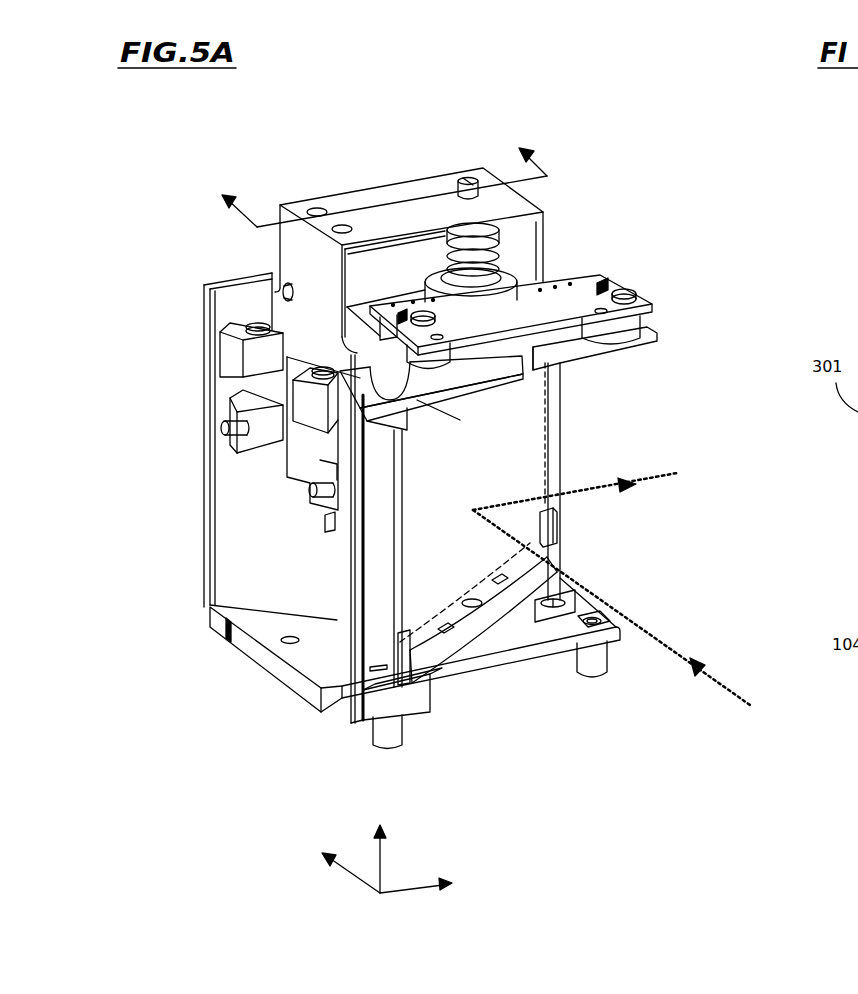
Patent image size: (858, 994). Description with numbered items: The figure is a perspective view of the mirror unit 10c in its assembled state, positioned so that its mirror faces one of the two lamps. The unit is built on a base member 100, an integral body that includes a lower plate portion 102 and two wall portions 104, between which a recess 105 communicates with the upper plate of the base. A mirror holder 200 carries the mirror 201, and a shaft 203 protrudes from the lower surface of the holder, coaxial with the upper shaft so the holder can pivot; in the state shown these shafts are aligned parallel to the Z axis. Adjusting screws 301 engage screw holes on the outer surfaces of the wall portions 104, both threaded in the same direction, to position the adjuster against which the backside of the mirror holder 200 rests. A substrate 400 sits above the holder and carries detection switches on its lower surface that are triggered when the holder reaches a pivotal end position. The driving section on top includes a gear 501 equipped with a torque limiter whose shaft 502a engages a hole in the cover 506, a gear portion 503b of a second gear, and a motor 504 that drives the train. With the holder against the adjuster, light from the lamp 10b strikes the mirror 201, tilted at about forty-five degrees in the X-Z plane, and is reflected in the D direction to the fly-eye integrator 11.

The base member 100 is at (265, 698).
The lower plate portion 102 is at (553, 618).
The wall portions 104 is at (227, 493).
The recess 105 is at (295, 580).
The mirror holder 200 is at (570, 415).
The mirror 201 is at (510, 476).
The shaft 203 is at (485, 594).
The adjusting screws 301 is at (312, 482).
The substrate 400 is at (582, 273).
The gear 501 is at (550, 290).
The shaft 502a is at (462, 182).
The gear portion 503b is at (382, 277).
The motor 504 is at (300, 480).
The cover 506 is at (335, 197).
The mirror unit 10c is at (463, 703).
The lamp 10b is at (653, 620).
The fly-eye integrator 11 is at (660, 488).